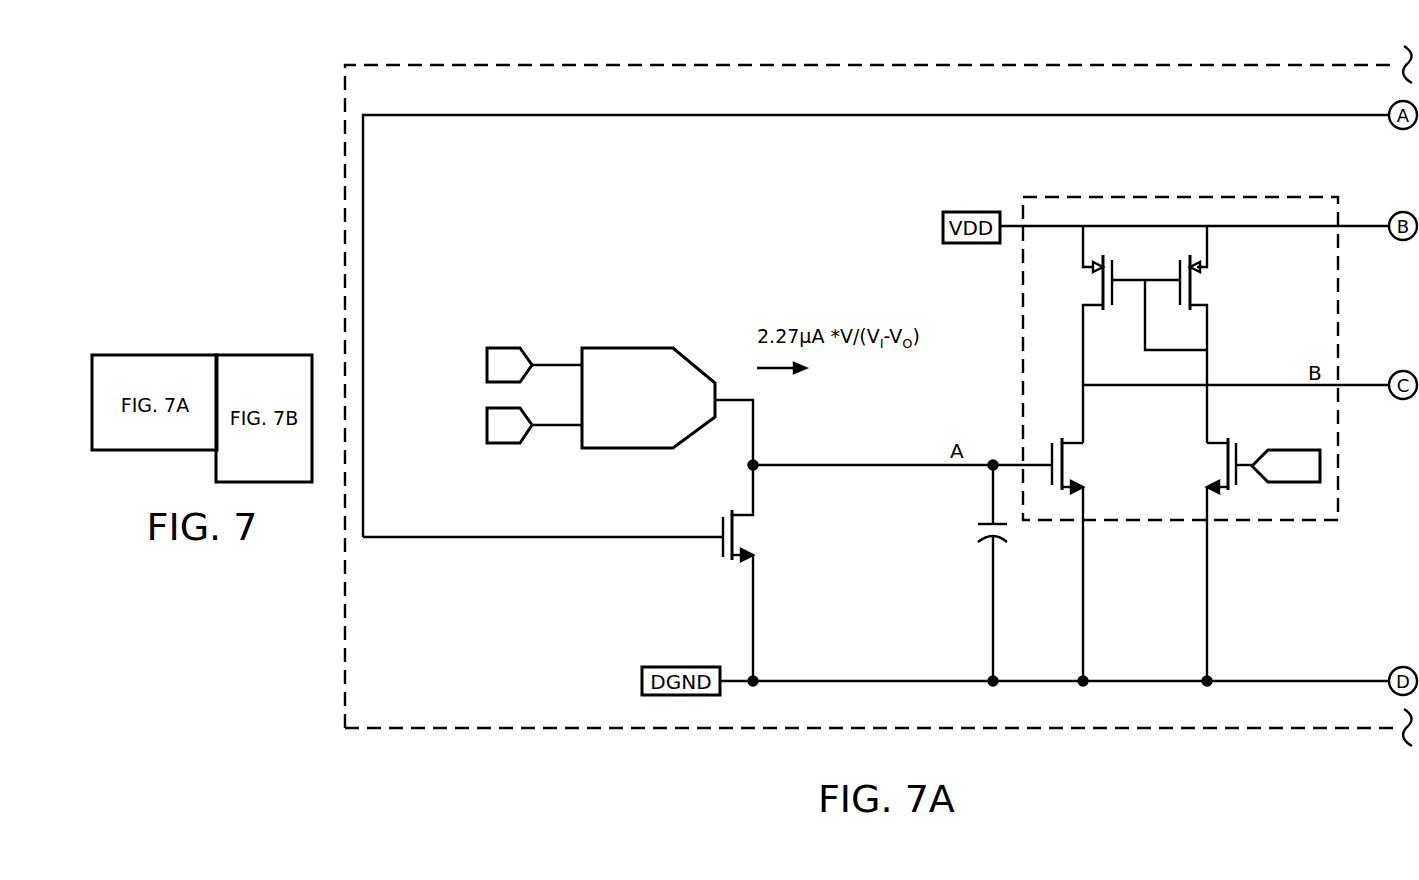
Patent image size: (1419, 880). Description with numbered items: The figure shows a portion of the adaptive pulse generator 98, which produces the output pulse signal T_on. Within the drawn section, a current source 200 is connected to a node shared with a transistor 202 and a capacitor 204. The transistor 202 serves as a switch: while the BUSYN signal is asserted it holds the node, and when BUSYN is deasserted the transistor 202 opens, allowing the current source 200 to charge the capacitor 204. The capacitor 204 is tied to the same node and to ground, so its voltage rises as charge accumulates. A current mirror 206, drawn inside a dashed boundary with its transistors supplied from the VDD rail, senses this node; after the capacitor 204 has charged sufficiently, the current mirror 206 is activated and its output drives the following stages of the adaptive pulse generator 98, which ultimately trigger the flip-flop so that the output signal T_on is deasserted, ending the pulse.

The adaptive pulse generator 98 is at (1140, 728).
The current source 200 is at (680, 350).
The transistor 202 is at (723, 557).
The capacitor 204 is at (975, 540).
The current mirror 206 is at (1150, 197).